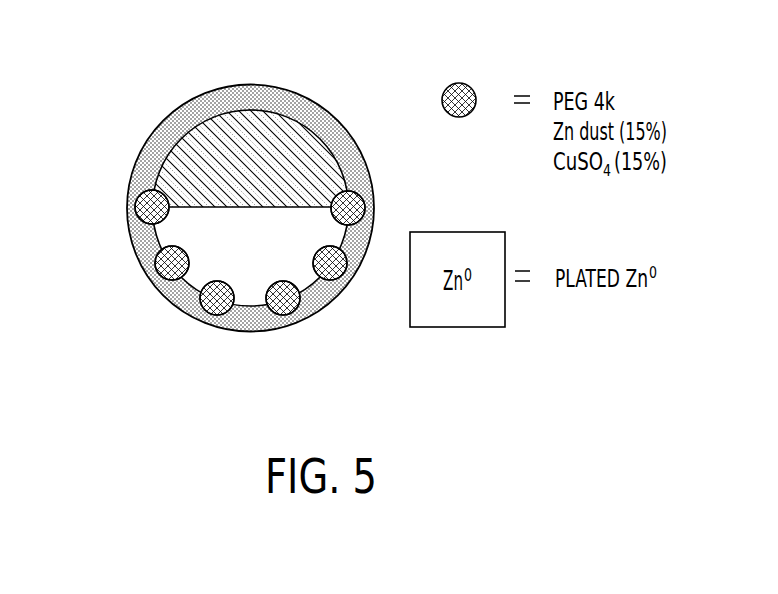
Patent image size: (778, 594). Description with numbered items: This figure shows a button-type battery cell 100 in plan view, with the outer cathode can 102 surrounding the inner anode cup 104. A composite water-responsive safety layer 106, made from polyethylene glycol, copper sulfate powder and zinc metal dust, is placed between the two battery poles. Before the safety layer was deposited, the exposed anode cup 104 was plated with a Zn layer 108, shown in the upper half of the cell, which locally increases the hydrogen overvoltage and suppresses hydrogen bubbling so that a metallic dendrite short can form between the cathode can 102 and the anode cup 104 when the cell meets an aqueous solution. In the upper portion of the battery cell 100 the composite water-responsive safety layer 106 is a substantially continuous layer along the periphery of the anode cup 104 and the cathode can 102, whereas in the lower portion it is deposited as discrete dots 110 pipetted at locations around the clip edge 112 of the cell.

The battery cell 100 is at (123, 107).
The cathode can 102 is at (260, 86).
The anode cup 104 is at (292, 121).
The composite water-responsive safety layer 106 is at (335, 128).
The Zn layer 108 is at (265, 242).
The discrete dots 110 is at (199, 302).
The clip edge 112 is at (247, 308).